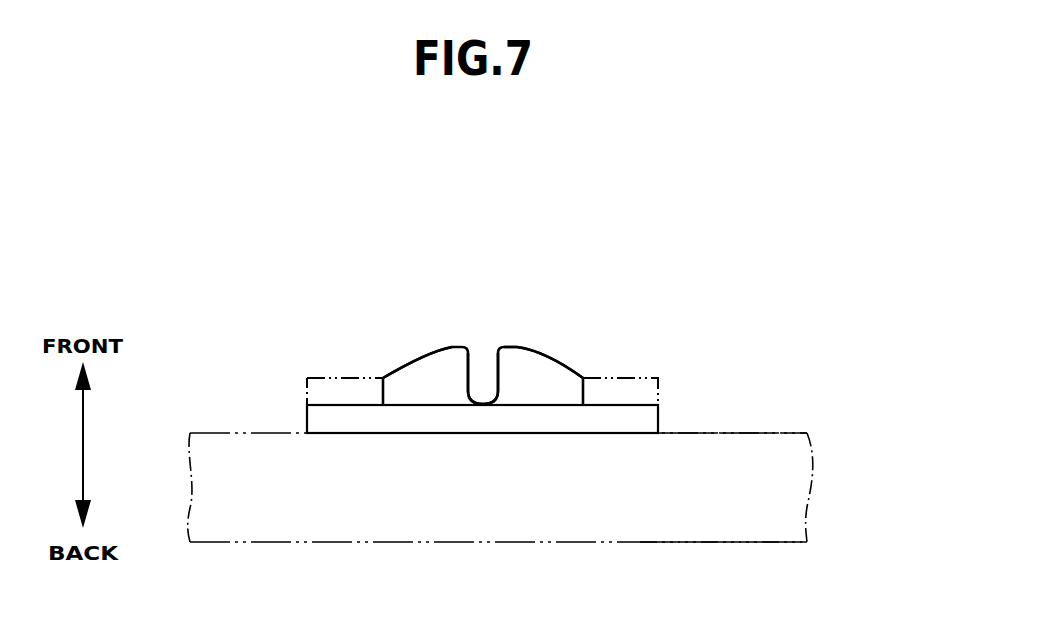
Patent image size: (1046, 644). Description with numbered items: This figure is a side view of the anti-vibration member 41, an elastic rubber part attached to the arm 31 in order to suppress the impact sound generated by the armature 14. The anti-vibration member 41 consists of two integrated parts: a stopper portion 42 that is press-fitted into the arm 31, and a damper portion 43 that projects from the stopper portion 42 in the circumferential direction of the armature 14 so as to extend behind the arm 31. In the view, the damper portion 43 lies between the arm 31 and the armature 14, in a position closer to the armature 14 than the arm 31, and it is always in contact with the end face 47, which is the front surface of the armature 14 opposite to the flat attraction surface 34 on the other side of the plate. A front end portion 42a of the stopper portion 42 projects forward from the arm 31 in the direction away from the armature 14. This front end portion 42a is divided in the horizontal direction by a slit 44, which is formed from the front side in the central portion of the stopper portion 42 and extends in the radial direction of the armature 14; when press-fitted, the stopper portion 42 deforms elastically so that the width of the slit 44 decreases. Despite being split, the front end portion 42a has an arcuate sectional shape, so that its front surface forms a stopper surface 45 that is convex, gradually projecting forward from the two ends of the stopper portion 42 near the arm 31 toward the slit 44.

The armature 14 is at (770, 472).
The arm 31 is at (322, 377).
The attraction surface 34 is at (750, 542).
The anti-vibration member 41 is at (386, 357).
The stopper portion 42 is at (584, 388).
The front end portion 42a is at (509, 360).
The damper portion 43 is at (658, 422).
The slit 44 is at (481, 377).
The stopper surface 45 is at (415, 353).
The end face 47 is at (762, 433).